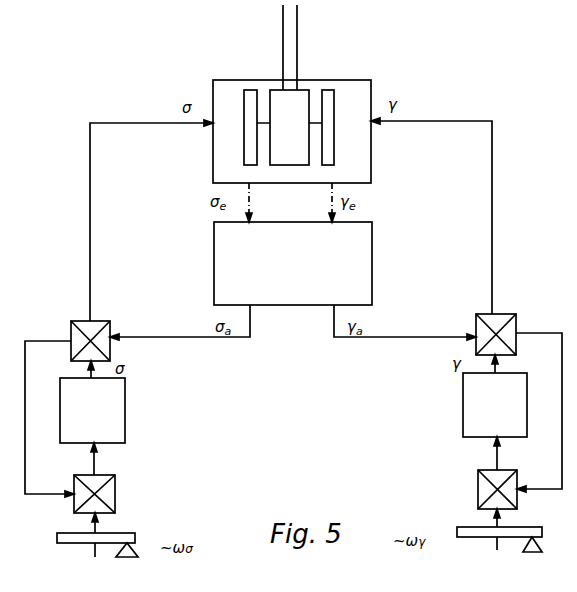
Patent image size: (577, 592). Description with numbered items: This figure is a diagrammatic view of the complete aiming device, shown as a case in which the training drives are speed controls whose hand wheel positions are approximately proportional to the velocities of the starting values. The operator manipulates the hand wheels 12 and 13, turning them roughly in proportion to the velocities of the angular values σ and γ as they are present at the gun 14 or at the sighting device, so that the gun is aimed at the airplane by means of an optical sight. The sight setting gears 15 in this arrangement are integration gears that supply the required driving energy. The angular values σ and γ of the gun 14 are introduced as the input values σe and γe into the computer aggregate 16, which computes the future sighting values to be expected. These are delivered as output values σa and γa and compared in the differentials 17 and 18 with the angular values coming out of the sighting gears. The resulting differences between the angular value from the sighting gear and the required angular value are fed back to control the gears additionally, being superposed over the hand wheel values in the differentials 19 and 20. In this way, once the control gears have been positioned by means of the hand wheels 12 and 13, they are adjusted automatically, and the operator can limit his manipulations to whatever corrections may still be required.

The hand wheel 12 is at (57, 538).
The hand wheel 13 is at (540, 531).
The gun 14 is at (310, 82).
The sight setting gear 15 is at (60, 408).
The computer aggregate 16 is at (372, 263).
The differential 17 is at (76, 330).
The differential 18 is at (512, 323).
The differential 19 is at (115, 491).
The differential 20 is at (478, 490).